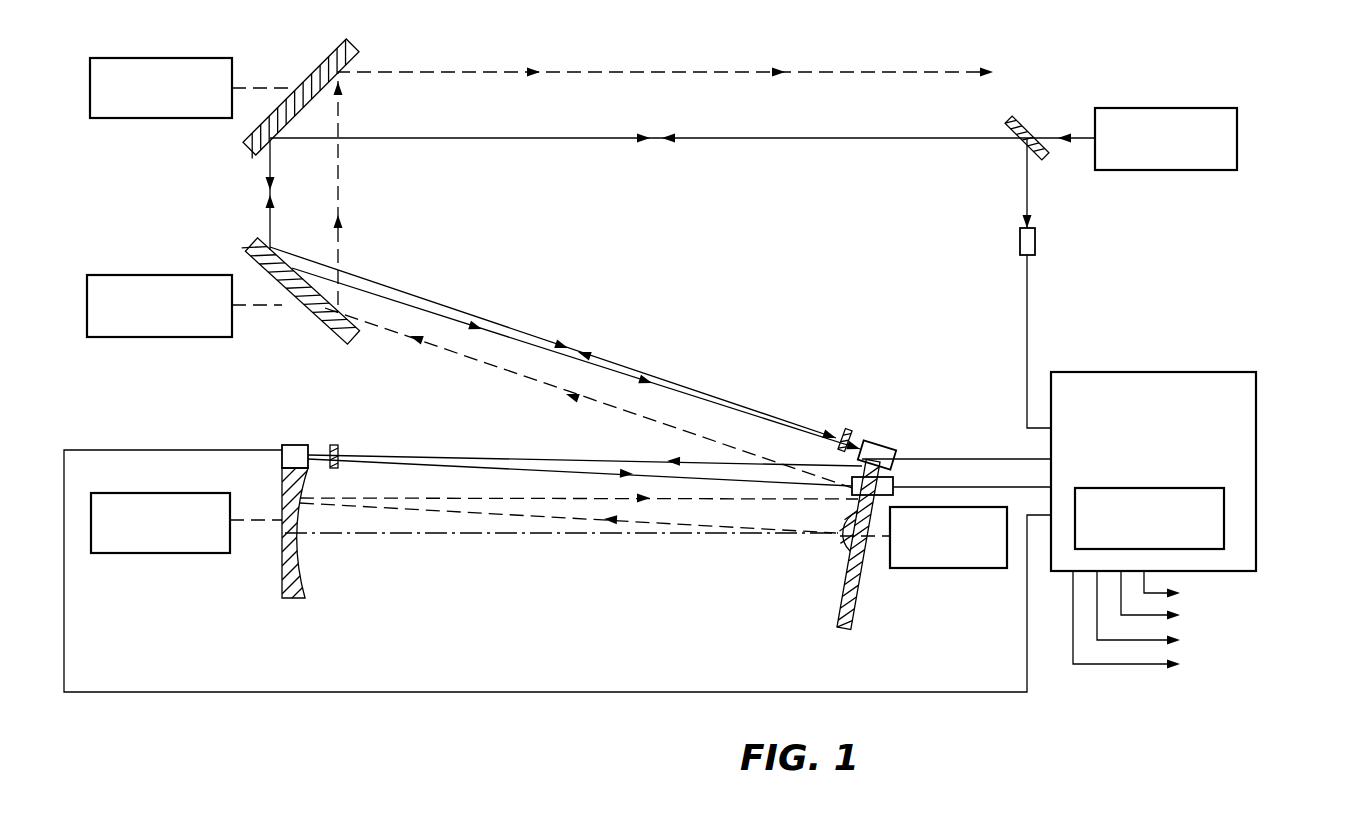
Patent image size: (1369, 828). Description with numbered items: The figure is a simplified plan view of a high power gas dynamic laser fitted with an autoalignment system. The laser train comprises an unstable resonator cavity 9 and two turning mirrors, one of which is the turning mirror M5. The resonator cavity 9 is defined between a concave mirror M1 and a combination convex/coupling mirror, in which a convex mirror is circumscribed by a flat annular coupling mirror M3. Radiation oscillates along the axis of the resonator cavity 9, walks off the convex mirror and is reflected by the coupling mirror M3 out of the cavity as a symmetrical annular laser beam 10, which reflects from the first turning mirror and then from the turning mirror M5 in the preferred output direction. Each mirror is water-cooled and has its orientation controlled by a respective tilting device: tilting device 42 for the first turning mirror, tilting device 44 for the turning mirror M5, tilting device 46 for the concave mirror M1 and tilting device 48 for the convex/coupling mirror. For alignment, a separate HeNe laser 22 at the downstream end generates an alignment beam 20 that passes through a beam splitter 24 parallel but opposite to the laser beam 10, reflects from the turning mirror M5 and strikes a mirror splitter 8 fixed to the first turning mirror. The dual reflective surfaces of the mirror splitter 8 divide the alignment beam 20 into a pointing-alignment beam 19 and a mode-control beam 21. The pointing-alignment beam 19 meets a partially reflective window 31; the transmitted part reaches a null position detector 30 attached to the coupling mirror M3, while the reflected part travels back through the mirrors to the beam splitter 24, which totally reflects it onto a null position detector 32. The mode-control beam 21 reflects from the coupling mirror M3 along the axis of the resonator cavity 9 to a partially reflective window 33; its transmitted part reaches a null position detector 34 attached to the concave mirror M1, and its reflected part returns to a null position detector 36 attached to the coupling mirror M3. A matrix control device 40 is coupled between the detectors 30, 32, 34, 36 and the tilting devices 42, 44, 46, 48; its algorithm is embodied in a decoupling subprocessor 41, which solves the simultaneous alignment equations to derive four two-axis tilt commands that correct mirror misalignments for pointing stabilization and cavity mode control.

The mirror splitter 8 is at (278, 282).
The unstable resonator cavity 9 is at (590, 565).
The laser beam 10 is at (826, 72).
The pointing-alignment beam 19 is at (1027, 200).
The alignment beam 20 is at (1076, 140).
The mode-control beam 21 is at (576, 368).
The HeNe laser 22 is at (1128, 108).
The beam splitter 24 is at (1028, 126).
The null position detector 30 is at (876, 436).
The partially reflective window 31 is at (836, 425).
The null position detector 32 is at (1035, 246).
The partially reflective window 33 is at (334, 445).
The null position detector 34 is at (290, 445).
The null position detector 36 is at (893, 480).
The matrix control device 40 is at (1156, 372).
The decoupling subprocessor 41 is at (1150, 488).
The tilting device 42 is at (215, 337).
The tilting device 44 is at (232, 58).
The tilting device 46 is at (213, 553).
The tilting device 48 is at (966, 507).
The concave mirror M1 is at (297, 538).
The coupling mirror M3 is at (850, 544).
The turning mirror M5 is at (299, 96).